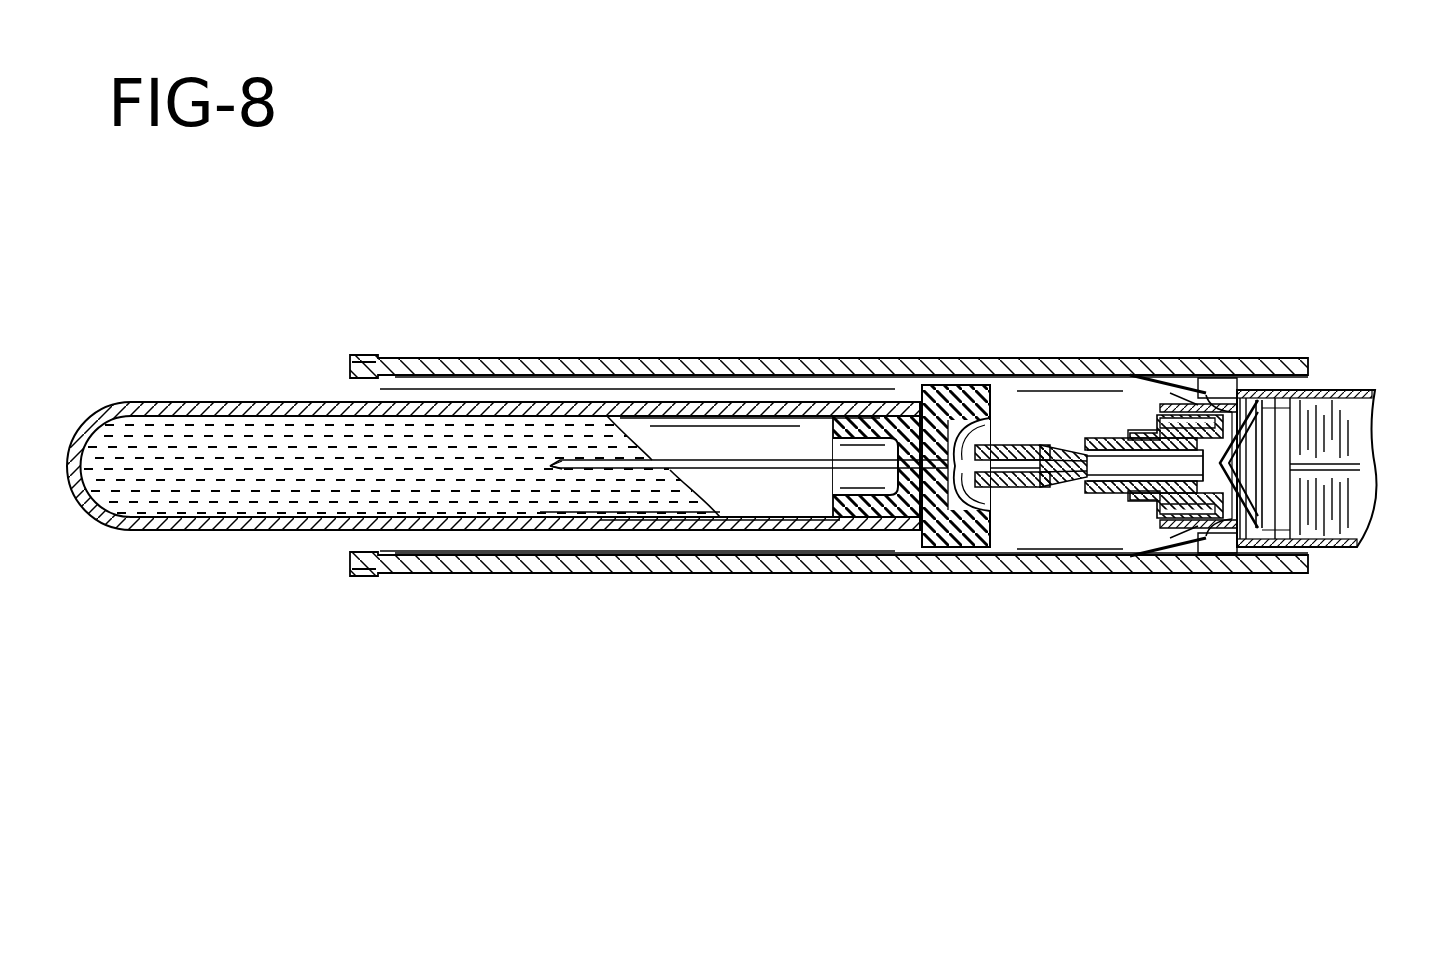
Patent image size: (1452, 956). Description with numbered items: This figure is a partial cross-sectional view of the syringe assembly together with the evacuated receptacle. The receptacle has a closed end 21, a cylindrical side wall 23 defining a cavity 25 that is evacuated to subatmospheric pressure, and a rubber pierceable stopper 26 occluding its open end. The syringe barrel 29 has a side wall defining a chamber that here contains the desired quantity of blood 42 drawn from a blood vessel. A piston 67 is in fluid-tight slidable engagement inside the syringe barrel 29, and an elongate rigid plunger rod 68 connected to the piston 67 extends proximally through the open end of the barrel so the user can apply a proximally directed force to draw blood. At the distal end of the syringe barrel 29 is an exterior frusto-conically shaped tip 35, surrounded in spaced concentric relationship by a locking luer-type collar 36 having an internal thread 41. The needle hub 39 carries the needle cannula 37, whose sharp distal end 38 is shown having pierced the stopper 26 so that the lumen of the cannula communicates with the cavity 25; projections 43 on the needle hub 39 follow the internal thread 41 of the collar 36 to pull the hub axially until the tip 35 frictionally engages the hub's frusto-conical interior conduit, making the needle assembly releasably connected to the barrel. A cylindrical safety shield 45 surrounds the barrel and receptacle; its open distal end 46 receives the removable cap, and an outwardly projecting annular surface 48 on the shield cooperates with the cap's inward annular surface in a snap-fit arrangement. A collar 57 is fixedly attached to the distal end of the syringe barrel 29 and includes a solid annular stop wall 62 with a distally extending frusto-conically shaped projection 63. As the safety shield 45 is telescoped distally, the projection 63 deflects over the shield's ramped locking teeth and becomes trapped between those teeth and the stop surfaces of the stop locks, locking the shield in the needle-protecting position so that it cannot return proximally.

The closed end 21 is at (485, 468).
The cylindrical side wall 23 is at (784, 437).
The cavity 25 is at (775, 432).
The pierceable stopper 26 is at (965, 545).
The syringe barrel 29 is at (1338, 546).
The frusto-conically shaped tip 35 is at (1108, 440).
The locking luer-type collar 36 is at (1122, 525).
The needle cannula 37 is at (773, 470).
The sharp distal end 38 is at (566, 470).
The needle hub 39 is at (1002, 448).
The internal thread 41 is at (1080, 525).
The blood 42 is at (216, 487).
The projections 43 is at (1170, 415).
The safety shield 45 is at (548, 359).
The open distal end 46 is at (440, 360).
The outwardly projecting annular surface 48 is at (352, 357).
The collar 57 is at (1160, 522).
The solid annular stop wall 62 is at (1240, 383).
The distally extending frusto-conically shaped projection 63 is at (1222, 550).
The piston 67 is at (1257, 407).
The plunger rod 68 is at (1338, 446).